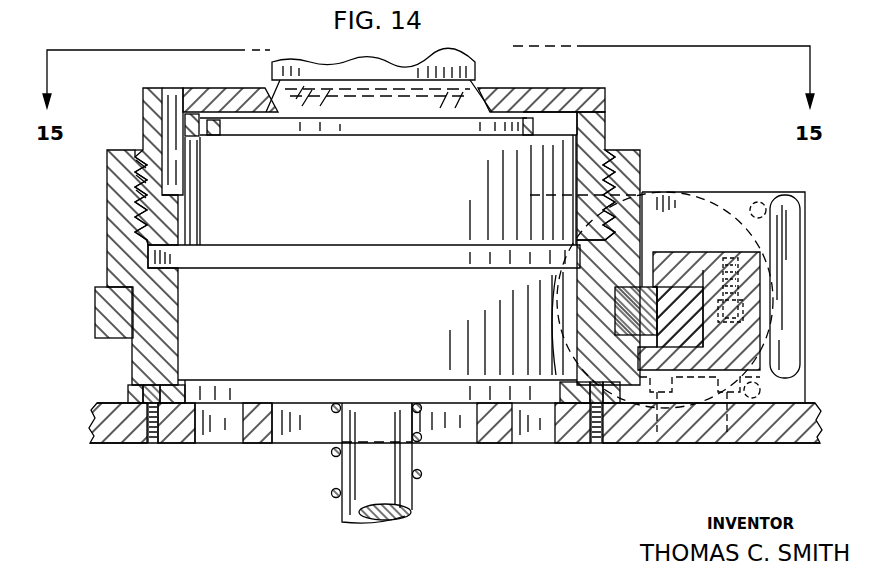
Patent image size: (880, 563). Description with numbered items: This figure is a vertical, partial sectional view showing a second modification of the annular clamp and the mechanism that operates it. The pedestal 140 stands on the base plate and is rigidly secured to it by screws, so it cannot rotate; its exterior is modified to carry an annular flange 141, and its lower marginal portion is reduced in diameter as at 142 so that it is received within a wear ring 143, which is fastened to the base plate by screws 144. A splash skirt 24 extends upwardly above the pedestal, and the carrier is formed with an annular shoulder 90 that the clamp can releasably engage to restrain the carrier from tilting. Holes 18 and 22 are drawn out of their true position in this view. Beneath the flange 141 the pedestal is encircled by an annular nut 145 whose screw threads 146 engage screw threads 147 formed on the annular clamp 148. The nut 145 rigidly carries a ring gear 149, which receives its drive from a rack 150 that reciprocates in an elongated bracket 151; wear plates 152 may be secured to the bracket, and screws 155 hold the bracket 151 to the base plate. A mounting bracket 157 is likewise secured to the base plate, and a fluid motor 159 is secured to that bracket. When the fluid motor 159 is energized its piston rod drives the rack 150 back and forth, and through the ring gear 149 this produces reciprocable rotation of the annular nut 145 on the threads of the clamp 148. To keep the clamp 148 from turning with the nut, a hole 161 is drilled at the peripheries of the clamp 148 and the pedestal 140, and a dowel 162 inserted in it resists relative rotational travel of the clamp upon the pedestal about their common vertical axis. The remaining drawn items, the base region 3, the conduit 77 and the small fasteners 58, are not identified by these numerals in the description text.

The annular nut 145 is at (108, 152).
The annular clamp 148 is at (150, 88).
The screw threads 146 is at (148, 184).
The screw threads 147 is at (143, 142).
The hole 161 is at (176, 90).
The annular shoulder 90 is at (547, 87).
The splash skirt 24 is at (535, 126).
The dowel 162 is at (184, 128).
The pedestal 140 is at (352, 212).
The annular flange 141 is at (148, 256).
The reduced-diameter lower marginal portion 142 is at (218, 374).
The ring gear 149 is at (96, 318).
The wear ring 143 is at (133, 384).
The screws 144 is at (128, 392).
The base plate 3 is at (293, 430).
The hole 22 is at (216, 430).
The hole 18 is at (536, 430).
The conduit 77 is at (336, 499).
The nuts 58 is at (420, 455).
The mounting bracket 157 is at (806, 226).
The fluid motor 159 is at (736, 196).
The rack 150 is at (670, 306).
The wear plates 152 is at (702, 332).
The elongated bracket 151 is at (765, 300).
The screws 155 is at (750, 445).